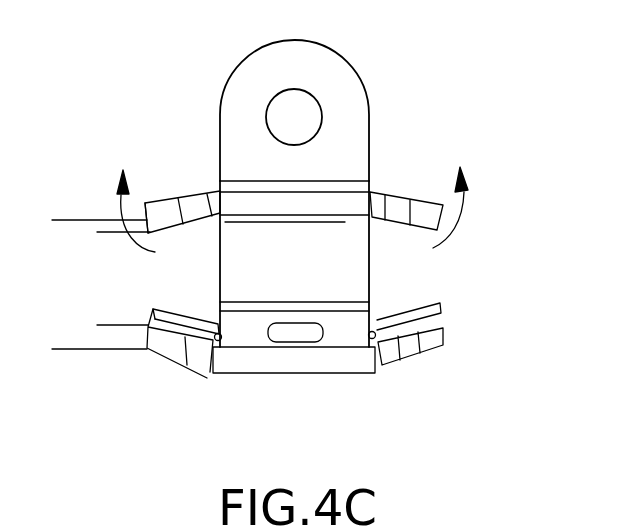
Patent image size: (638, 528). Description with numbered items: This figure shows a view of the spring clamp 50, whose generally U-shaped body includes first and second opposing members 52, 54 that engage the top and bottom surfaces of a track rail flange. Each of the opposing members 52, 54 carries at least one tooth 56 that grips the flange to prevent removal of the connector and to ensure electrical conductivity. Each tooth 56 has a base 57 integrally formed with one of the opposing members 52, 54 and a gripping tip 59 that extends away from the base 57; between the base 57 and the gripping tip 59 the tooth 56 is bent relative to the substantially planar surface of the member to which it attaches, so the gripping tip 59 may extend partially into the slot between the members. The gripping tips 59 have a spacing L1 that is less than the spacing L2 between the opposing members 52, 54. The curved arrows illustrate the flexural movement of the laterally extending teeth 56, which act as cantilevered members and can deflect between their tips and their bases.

The spring clamp 50 is at (413, 88).
The first opposing member 52 is at (240, 350).
The second opposing member 54 is at (330, 217).
The tooth 56 is at (168, 199).
The base 57 is at (215, 193).
The gripping tip 59 is at (153, 233).
The spacing of gripping tips L1 is at (108, 256).
The spacing between opposing members L2 is at (65, 245).